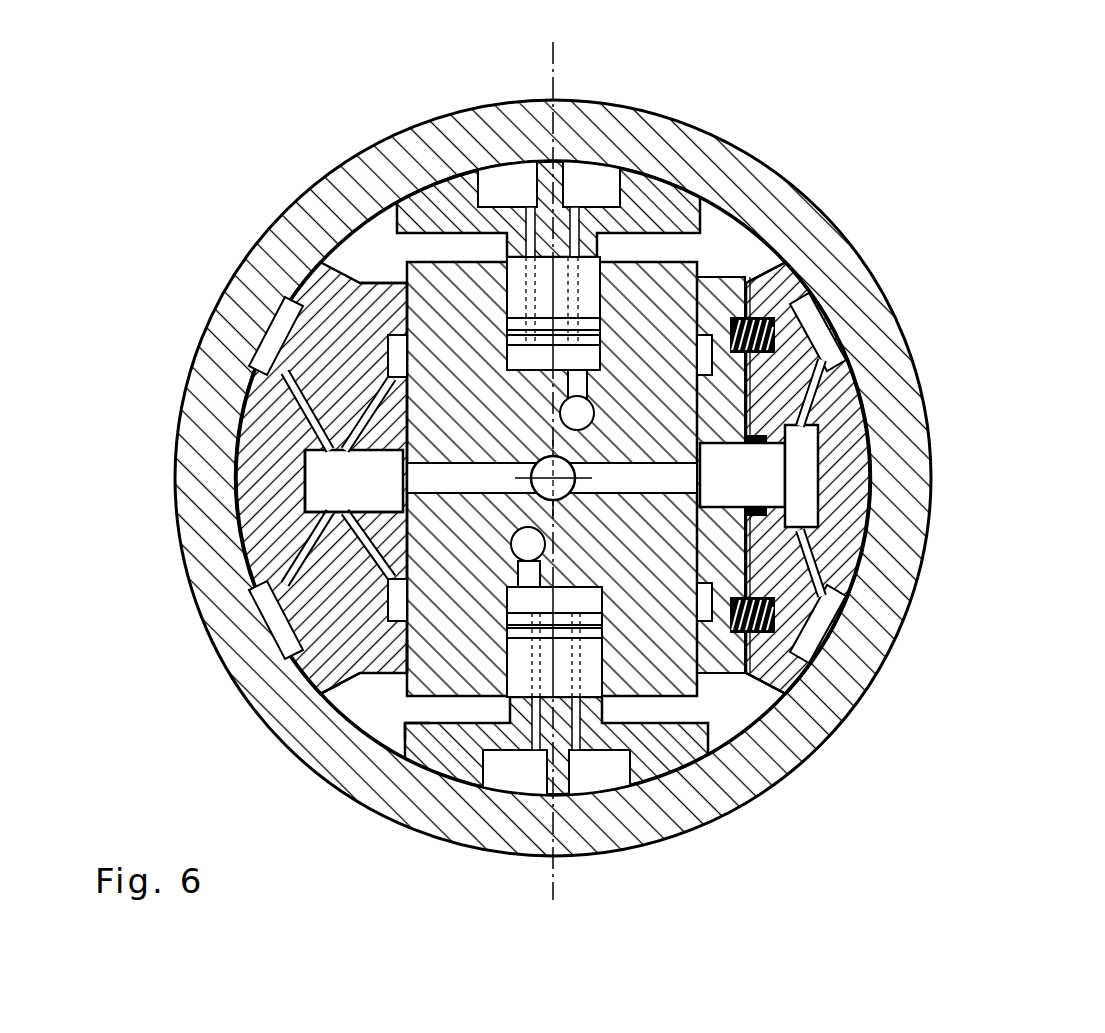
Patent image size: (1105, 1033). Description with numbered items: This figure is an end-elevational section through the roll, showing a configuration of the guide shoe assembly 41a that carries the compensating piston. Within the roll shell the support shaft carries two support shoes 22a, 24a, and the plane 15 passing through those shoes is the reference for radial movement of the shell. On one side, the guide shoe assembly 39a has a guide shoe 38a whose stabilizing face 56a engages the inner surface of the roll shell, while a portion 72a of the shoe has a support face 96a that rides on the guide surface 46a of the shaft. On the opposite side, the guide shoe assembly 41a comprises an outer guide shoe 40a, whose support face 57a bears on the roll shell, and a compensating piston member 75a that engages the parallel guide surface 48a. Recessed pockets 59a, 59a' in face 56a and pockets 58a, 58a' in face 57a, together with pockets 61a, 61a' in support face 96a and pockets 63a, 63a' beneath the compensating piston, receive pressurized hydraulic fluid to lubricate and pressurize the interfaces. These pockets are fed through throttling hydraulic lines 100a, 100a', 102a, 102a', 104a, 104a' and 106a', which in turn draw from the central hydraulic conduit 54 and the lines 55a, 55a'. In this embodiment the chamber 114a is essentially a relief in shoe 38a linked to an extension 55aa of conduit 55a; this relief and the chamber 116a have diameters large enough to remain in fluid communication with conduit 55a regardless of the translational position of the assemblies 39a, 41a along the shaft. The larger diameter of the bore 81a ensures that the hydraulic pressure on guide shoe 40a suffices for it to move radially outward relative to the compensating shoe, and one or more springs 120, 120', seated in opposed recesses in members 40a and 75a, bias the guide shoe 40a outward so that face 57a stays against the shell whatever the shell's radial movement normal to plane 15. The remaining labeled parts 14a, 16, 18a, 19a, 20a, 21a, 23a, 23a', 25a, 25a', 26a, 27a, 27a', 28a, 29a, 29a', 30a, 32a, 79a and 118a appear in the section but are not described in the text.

The housing 14a is at (277, 213).
The plane 15 is at (560, 76).
The central bore 16 is at (547, 460).
The rotor body 18a is at (523, 360).
The lower piston 19a is at (583, 598).
The upper piston 20a is at (585, 287).
The lower piston sleeve 21a is at (523, 658).
The support shoe 22a is at (655, 190).
The bolt 23a is at (506, 157).
The bolt 23a' is at (607, 165).
The support shoe 24a is at (665, 760).
The bolt head recess 25a is at (472, 128).
The bolt head recess 25a' is at (637, 127).
The upper piston rod 26a is at (588, 382).
The bolt head recess 27a is at (515, 827).
The bolt head recess 27a' is at (623, 822).
The lower piston rod 28a is at (518, 573).
The bolt 29a is at (472, 793).
The bolt 29a' is at (716, 753).
The rotor half 30a is at (582, 420).
The ball 32a is at (522, 547).
The guide shoe 38a is at (345, 712).
The guide shoe assembly 39a is at (358, 268).
The outer guide shoe 40a is at (749, 267).
The guide shoe assembly 41a is at (775, 255).
The guide surface 46a is at (398, 712).
The guide surface 48a is at (735, 685).
The central hydraulic conduit 54 is at (560, 495).
The hydraulic fluid conduit 55a is at (552, 458).
The hydraulic fluid conduit 55a' is at (648, 506).
The extension of conduit 55aa is at (330, 488).
The stabilizing face 56a is at (330, 655).
The support face 57a is at (782, 258).
The recessed pocket 58a is at (872, 277).
The recessed pocket 58a' is at (931, 624).
The recessed pocket 59a is at (266, 478).
The recessed pocket 59a' is at (221, 661).
The recessed pocket 61a is at (229, 331).
The recessed pocket 61a' is at (222, 639).
The recessed pocket 63a is at (671, 345).
The recessed pocket 63a' is at (672, 616).
The portion of guide shoe 72a is at (372, 748).
The compensating piston member 75a is at (730, 277).
The slider block 79a is at (815, 425).
The bore 81a is at (800, 438).
The support face 96a is at (410, 333).
The throttling hydraulic line 100a is at (189, 464).
The throttling hydraulic line 100a' is at (247, 560).
The throttling hydraulic line 102a is at (338, 408).
The throttling hydraulic line 102a' is at (338, 561).
The throttling hydraulic line 104a is at (938, 368).
The throttling hydraulic line 104a' is at (912, 563).
The throttling hydraulic line 106a' is at (630, 547).
The relief (chamber) 114a is at (413, 522).
The chamber 116a is at (770, 465).
The spring 118a is at (808, 360).
The spring 120 is at (877, 281).
The spring 120' is at (878, 652).